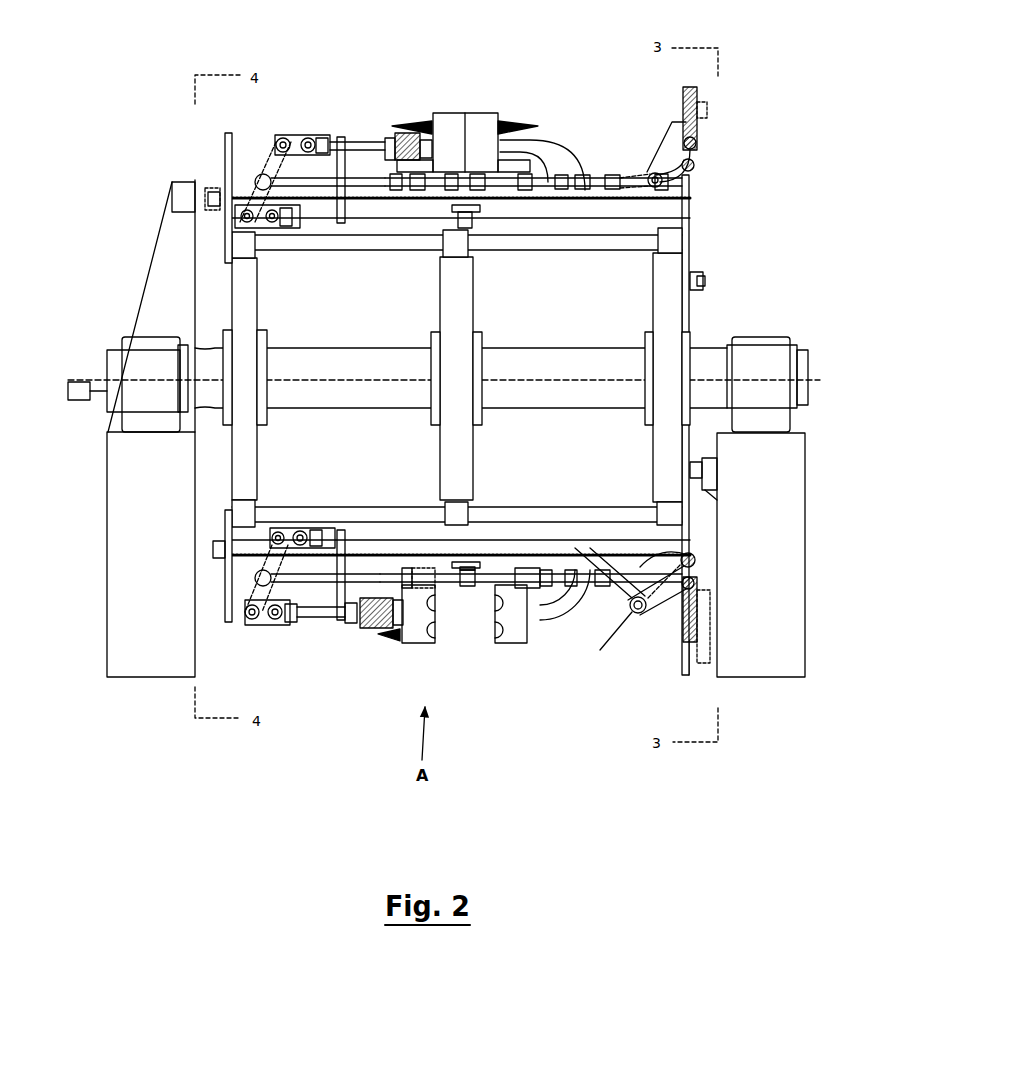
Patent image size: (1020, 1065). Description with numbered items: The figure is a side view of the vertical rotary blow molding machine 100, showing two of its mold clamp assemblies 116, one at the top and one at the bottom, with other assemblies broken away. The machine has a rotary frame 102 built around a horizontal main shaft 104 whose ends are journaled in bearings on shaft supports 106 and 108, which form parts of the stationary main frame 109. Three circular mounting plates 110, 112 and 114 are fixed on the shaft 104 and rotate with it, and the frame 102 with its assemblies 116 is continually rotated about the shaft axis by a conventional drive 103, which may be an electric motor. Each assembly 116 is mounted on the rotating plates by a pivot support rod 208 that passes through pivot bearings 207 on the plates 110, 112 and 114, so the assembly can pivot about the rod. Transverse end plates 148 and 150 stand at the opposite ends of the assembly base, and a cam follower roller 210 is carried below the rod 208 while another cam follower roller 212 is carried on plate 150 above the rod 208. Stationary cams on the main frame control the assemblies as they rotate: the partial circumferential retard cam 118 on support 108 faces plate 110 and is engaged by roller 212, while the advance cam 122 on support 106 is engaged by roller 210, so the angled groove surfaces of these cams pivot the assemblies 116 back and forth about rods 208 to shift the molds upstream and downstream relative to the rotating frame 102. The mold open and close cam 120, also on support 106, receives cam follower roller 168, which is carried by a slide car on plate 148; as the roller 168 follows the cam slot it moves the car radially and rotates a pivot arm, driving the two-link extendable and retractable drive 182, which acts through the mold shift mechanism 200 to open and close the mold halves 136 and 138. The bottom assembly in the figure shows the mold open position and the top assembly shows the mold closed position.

The rotary blow molding machine 100 is at (741, 48).
The rotary frame 102 is at (688, 314).
The drive 103 is at (74, 401).
The main shaft 104 is at (523, 348).
The shaft support 106 is at (725, 678).
The shaft support 108 is at (196, 662).
The main frame 109 is at (778, 682).
The mounting plate 110 is at (260, 310).
The mounting plate 112 is at (474, 294).
The mounting plate 114 is at (652, 302).
The mold clamp assembly 116 is at (332, 95).
The retard cam 118 is at (212, 202).
The mold open and close cam 120 is at (707, 592).
The advance cam 122 is at (700, 496).
The mold half 136 is at (412, 645).
The mold half 138 is at (515, 645).
The end plate 148 is at (690, 212).
The end plate 150 is at (223, 230).
The cam follower roller 168 is at (706, 108).
The extendable and retractable drive 182 is at (628, 618).
The mold shift mechanism 200 is at (257, 163).
The pivot bearing 207 is at (256, 252).
The pivot support rod 208 is at (523, 240).
The cam follower roller 210 is at (700, 281).
The cam follower roller 212 is at (212, 550).